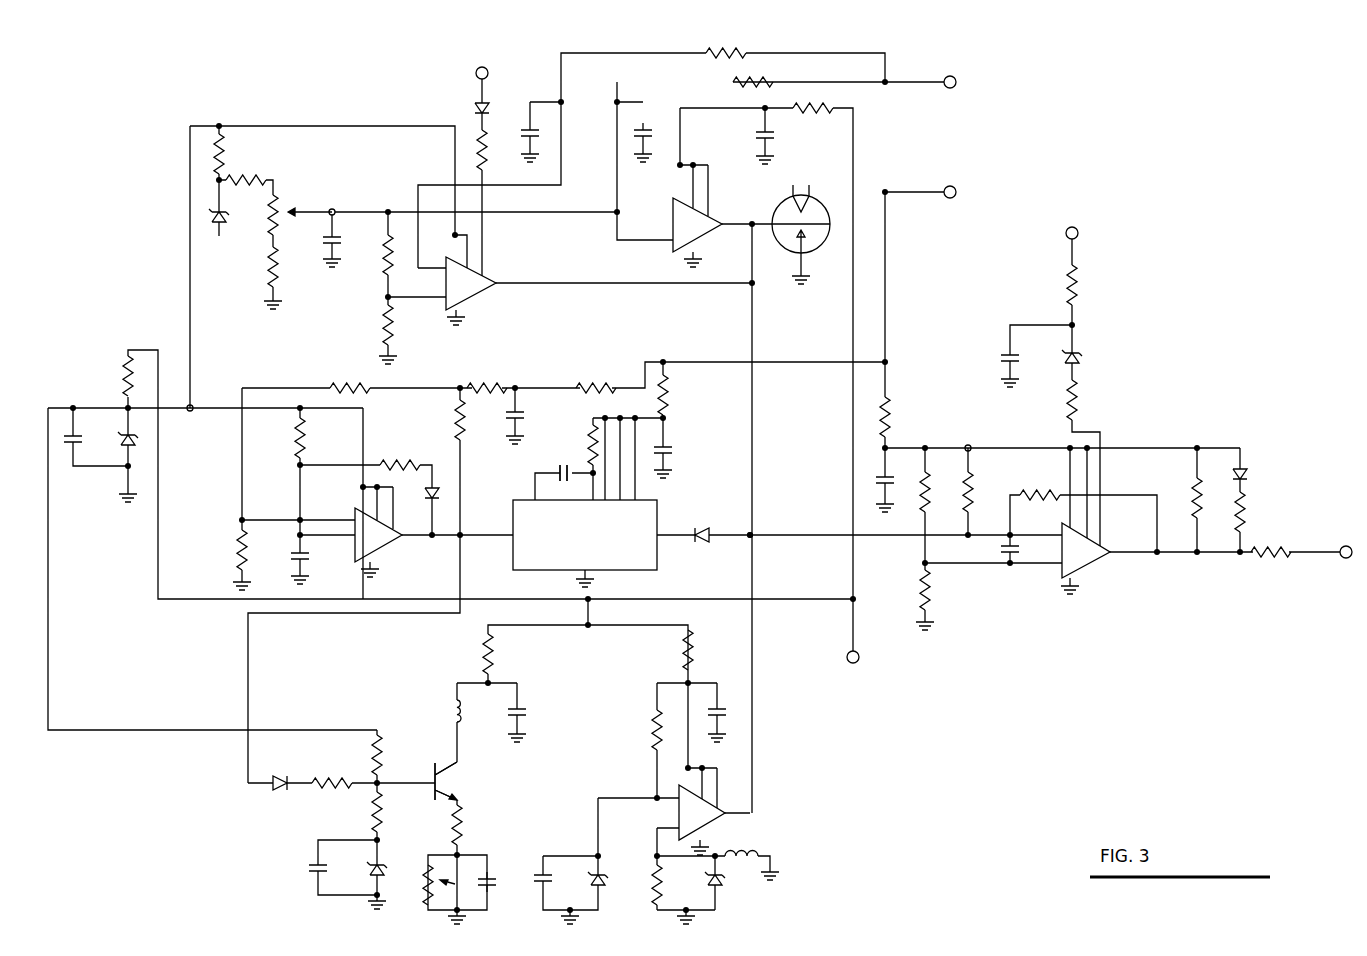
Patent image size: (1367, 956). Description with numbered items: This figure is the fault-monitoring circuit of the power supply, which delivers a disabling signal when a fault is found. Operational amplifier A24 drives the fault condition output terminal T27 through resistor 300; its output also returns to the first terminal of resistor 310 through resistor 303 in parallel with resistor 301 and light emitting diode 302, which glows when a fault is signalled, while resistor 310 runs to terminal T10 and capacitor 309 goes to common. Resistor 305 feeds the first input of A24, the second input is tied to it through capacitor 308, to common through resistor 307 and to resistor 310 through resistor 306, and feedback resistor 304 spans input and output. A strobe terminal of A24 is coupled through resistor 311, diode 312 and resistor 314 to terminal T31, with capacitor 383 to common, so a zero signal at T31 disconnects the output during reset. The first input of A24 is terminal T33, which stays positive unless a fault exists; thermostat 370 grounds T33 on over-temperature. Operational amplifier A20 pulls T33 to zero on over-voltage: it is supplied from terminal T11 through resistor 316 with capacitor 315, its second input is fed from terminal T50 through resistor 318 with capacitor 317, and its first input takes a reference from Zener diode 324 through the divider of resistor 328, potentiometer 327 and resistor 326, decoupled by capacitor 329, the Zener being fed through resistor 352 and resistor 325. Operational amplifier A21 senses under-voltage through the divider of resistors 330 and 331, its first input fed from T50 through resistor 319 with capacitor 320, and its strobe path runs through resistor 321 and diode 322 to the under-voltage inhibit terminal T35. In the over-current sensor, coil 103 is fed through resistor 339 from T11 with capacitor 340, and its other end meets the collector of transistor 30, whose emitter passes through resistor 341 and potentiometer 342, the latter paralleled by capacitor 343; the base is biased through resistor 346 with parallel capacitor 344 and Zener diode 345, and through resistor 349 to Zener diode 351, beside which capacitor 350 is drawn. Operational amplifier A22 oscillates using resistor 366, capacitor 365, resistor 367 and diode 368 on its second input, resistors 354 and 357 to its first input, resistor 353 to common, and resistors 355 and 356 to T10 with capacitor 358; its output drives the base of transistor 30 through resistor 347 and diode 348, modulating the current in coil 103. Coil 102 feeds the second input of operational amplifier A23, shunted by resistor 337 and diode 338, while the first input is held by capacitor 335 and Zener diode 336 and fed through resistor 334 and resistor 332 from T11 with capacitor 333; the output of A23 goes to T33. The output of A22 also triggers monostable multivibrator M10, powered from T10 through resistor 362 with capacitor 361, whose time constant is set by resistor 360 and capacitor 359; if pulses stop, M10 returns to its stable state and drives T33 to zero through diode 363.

The transistor 30 is at (447, 782).
The coil 102 is at (748, 850).
The coil 103 is at (452, 712).
The resistor 300 is at (1258, 544).
The resistor 301 is at (1246, 504).
The diode 302 is at (1248, 474).
The resistor 303 is at (1188, 494).
The feedback resistor 304 is at (1056, 490).
The resistor 305 is at (975, 480).
The resistor 306 is at (920, 508).
The resistor 307 is at (932, 590).
The capacitor 308 is at (998, 549).
The capacitor 309 is at (901, 484).
The resistor 310 is at (890, 410).
The resistor 311 is at (1076, 404).
The diode 312 is at (1080, 358).
The resistor 314 is at (1078, 290).
The capacitor 315 is at (776, 136).
The resistor 316 is at (818, 100).
The capacitor 317 is at (650, 132).
The resistor 318 is at (756, 76).
The resistor 319 is at (728, 58).
The capacitor 320 is at (520, 124).
The resistor 321 is at (487, 160).
The diode 322 is at (474, 110).
The Zener diode 324 is at (226, 217).
The resistor 325 is at (225, 150).
The resistor 326 is at (248, 176).
The potentiometer 327 is at (280, 207).
The resistor 328 is at (279, 275).
The capacitor 329 is at (353, 231).
The resistor 330 is at (384, 266).
The resistor 331 is at (394, 330).
The resistor 332 is at (682, 656).
The capacitor 333 is at (724, 693).
The resistor 334 is at (654, 726).
The capacitor 335 is at (536, 876).
The Zener diode 336 is at (604, 888).
The resistor 337 is at (662, 882).
The diode 338 is at (722, 886).
The resistor 339 is at (493, 648).
The capacitor 340 is at (526, 712).
The resistor 341 is at (450, 835).
The potentiometer 342 is at (422, 891).
The capacitor 343 is at (496, 870).
The capacitor 344 is at (308, 870).
The Zener diode 345 is at (370, 878).
The resistor 346 is at (372, 812).
The resistor 347 is at (348, 758).
The diode 348 is at (278, 792).
The resistor 349 is at (384, 760).
The capacitor 350 is at (84, 436).
The Zener diode 351 is at (122, 434).
The resistor 352 is at (124, 374).
The resistor 353 is at (236, 545).
The resistor 354 is at (368, 382).
The resistor 355 is at (480, 378).
The resistor 356 is at (588, 378).
The resistor 357 is at (466, 422).
The capacitor 358 is at (524, 418).
The capacitor 359 is at (575, 482).
The resistor 360 is at (588, 444).
The capacitor 361 is at (672, 448).
The resistor 362 is at (668, 394).
The diode 363 is at (700, 543).
The capacitor 365 is at (310, 558).
The resistor 366 is at (305, 440).
The resistor 367 is at (392, 458).
The diode 368 is at (424, 496).
The thermostat 370 is at (818, 230).
The capacitor 383 is at (998, 358).
The operational amplifier A20 is at (710, 232).
The operational amplifier A21 is at (478, 291).
The operational amplifier A22 is at (390, 542).
The operational amplifier A23 is at (715, 820).
The operational amplifier A24 is at (1094, 558).
The monostable multivibrator M10 is at (585, 543).
The terminal T10 is at (953, 181).
The terminal T11 is at (853, 669).
The fault condition output terminal T27 is at (1338, 560).
The terminal T31 is at (1073, 221).
The terminal T33 is at (752, 533).
The under-voltage inhibit terminal T35 is at (483, 61).
The terminal T50 is at (953, 70).